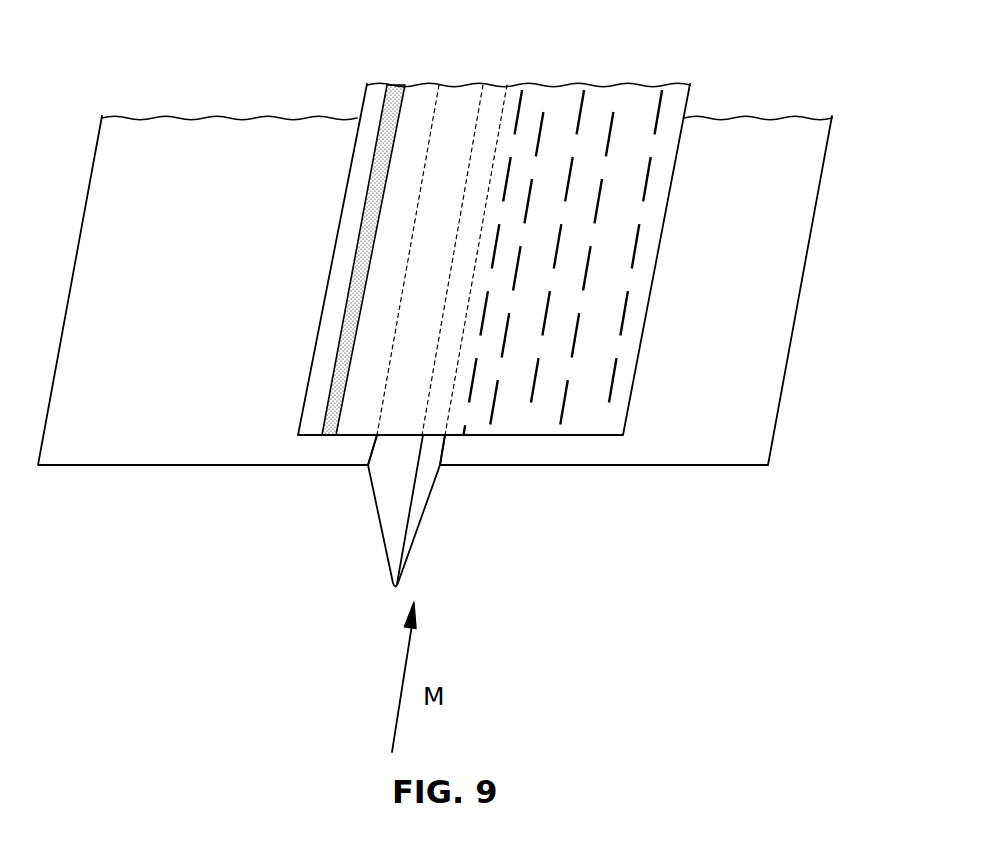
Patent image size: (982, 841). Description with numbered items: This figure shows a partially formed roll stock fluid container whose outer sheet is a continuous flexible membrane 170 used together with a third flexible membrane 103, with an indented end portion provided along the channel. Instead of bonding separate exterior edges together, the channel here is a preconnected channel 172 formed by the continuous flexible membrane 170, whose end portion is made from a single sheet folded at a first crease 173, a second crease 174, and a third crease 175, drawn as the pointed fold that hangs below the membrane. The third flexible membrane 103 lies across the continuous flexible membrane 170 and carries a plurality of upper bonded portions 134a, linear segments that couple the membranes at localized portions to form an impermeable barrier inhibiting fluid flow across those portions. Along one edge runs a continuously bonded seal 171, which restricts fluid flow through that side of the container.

The continuous flexible membrane 170 is at (117, 442).
The third flexible membrane 103 is at (463, 110).
The continuously bonded seal 171 is at (404, 97).
The upper bonded portions 134a is at (661, 100).
The preconnected channel 172 is at (388, 500).
The first crease 173 is at (443, 452).
The second crease 174 is at (367, 452).
The third crease 175 is at (410, 513).